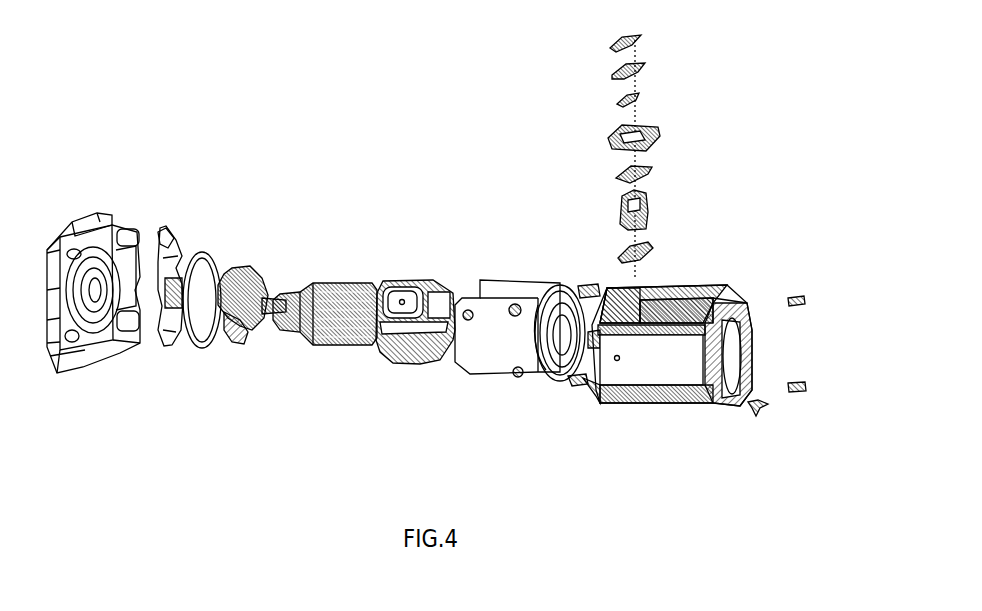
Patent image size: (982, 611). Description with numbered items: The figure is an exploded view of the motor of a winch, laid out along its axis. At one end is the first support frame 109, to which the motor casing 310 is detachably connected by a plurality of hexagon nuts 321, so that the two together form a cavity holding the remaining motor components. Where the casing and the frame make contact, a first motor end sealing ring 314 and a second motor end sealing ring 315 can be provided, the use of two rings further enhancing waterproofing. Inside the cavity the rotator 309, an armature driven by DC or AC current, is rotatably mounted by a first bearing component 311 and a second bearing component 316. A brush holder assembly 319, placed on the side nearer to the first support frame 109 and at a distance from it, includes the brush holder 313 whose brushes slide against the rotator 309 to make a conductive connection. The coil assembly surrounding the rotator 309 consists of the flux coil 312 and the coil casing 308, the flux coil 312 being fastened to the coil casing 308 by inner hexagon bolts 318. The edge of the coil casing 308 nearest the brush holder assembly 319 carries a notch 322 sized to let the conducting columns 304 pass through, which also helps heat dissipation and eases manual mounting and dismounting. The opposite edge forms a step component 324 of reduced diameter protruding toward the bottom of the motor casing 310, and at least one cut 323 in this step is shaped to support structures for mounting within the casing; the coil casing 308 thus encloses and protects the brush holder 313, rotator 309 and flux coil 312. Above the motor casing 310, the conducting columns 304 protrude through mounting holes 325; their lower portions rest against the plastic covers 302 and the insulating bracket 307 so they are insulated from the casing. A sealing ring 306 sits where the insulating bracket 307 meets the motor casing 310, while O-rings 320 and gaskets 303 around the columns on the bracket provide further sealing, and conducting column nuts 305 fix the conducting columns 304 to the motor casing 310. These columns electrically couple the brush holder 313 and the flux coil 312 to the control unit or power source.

The first support frame 109 is at (100, 212).
The second bearing component 316 is at (160, 275).
The second motor end sealing ring 315 is at (161, 228).
The first motor end sealing ring 314 is at (214, 256).
The brush holder 313 is at (254, 272).
The brush holder assembly 319 is at (241, 346).
The rotator 309 is at (314, 283).
The flux coil 312 is at (402, 280).
The coil casing 308 is at (523, 280).
The notch 322 is at (472, 292).
The first bearing component 311 is at (578, 288).
The cut 323 is at (561, 288).
The step component 324 is at (541, 365).
The motor casing 310 is at (727, 283).
The inner hexagon bolt 318 is at (586, 380).
The mounting hole 325 is at (646, 283).
The hexagon nut 321 is at (754, 412).
The conducting column nut 305 is at (638, 36).
The gasket 303 is at (645, 67).
The O-ring 320 is at (642, 98).
The insulating bracket 307 is at (658, 138).
The sealing ring 306 is at (648, 172).
The conducting column 304 is at (652, 213).
The plastic cover 302 is at (656, 247).